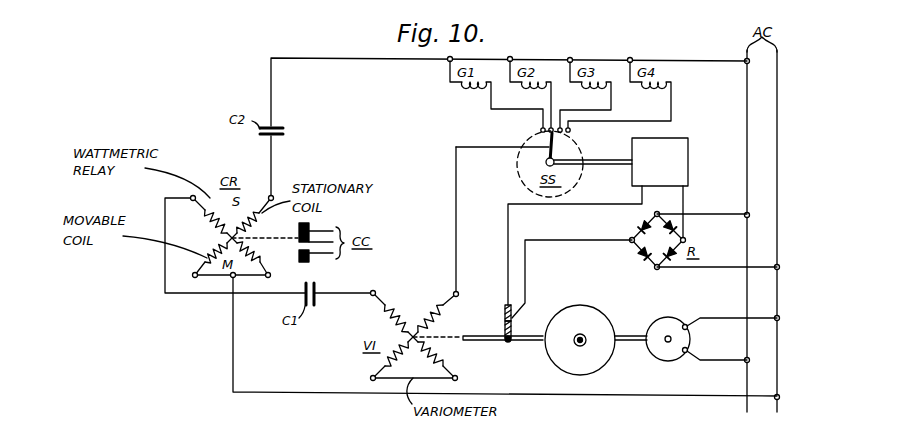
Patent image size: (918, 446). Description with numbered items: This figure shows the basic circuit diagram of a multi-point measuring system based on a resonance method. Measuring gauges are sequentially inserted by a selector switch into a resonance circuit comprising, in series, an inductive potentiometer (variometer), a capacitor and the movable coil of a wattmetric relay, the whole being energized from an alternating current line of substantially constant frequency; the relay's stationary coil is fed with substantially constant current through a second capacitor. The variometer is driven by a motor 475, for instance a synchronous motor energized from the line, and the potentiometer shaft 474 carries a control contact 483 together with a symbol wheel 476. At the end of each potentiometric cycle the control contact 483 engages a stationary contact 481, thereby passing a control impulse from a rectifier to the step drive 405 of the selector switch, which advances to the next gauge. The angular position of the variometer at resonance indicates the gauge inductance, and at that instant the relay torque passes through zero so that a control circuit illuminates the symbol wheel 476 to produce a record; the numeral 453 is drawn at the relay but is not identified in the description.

The step drive 405 is at (688, 142).
The relay contact link 453 is at (265, 249).
The potentiometer shaft 474 is at (537, 342).
The motor 475 is at (669, 318).
The symbol wheel 476 is at (588, 312).
The stationary contact 481 is at (505, 306).
The control contact 483 is at (505, 324).